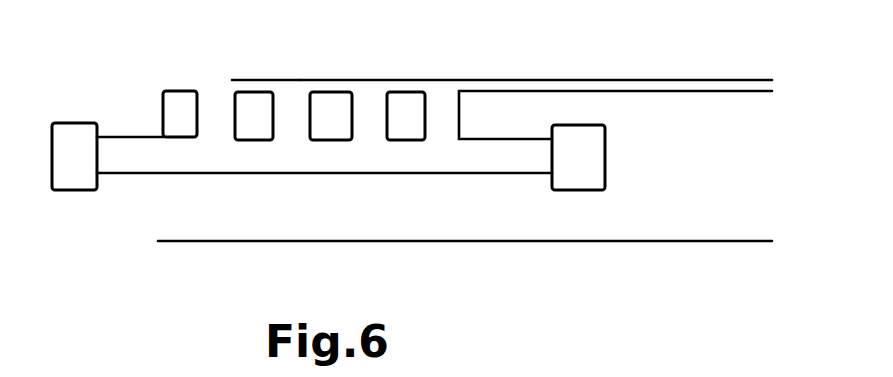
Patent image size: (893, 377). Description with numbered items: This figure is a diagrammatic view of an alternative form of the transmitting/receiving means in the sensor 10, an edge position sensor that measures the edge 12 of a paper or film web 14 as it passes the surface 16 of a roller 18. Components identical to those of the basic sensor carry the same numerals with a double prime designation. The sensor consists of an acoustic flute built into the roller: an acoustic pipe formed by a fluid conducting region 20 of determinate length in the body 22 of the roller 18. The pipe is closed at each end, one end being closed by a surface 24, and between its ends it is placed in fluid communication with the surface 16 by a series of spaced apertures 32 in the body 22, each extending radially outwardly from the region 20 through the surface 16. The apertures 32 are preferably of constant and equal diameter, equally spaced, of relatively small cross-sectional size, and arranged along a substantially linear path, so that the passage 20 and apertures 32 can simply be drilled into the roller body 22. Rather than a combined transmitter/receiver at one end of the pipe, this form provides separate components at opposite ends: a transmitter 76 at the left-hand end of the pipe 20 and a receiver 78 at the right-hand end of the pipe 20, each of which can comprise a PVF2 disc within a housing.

The sensor 10 is at (77, 62).
The edge 12 is at (233, 80).
The web 14 is at (491, 80).
The surface 16 is at (668, 91).
The roller 18 is at (740, 127).
The fluid conducting region 20 is at (272, 165).
The body 22 is at (166, 113).
The surface 24 is at (459, 133).
The apertures 32 is at (290, 100).
The transmitter 76 is at (62, 191).
The receiver 78 is at (590, 190).